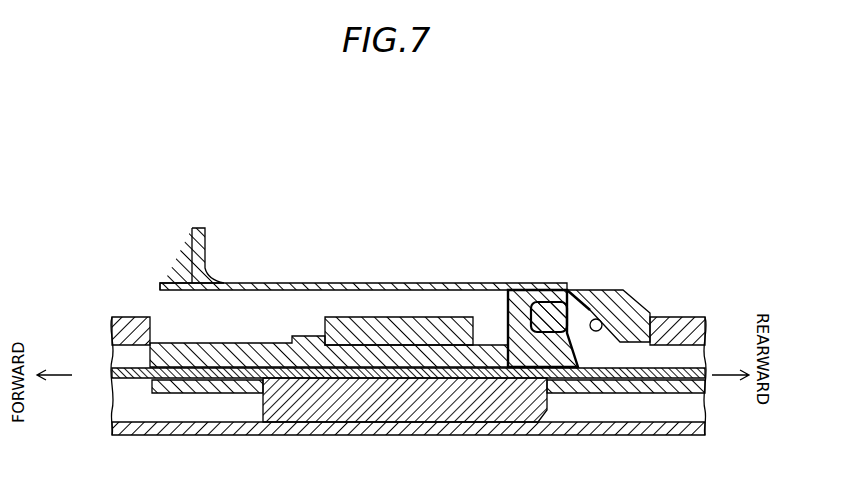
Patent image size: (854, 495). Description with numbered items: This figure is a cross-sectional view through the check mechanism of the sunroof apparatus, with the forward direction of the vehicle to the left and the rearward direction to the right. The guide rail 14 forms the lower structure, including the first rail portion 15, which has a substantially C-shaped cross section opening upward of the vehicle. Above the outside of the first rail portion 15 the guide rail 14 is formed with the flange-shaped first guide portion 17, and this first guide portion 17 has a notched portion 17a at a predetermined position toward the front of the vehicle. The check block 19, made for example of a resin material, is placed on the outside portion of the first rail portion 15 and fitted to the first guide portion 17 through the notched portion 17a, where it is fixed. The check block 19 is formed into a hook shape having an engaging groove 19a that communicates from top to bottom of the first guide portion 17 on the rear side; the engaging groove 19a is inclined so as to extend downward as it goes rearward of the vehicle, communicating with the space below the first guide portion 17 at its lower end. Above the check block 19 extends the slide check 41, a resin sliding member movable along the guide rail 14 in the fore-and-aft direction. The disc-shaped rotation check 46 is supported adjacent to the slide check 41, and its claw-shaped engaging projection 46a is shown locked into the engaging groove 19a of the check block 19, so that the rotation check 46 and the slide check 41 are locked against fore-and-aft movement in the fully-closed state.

The guide rail 14 is at (237, 436).
The first rail portion 15 is at (600, 422).
The first guide portion 17 is at (130, 318).
The notched portion 17a is at (650, 320).
The check block 19 is at (218, 343).
The engaging groove 19a is at (622, 297).
The slide check 41 is at (390, 283).
The rotation check 46 is at (543, 328).
The engaging projection 46a is at (548, 302).